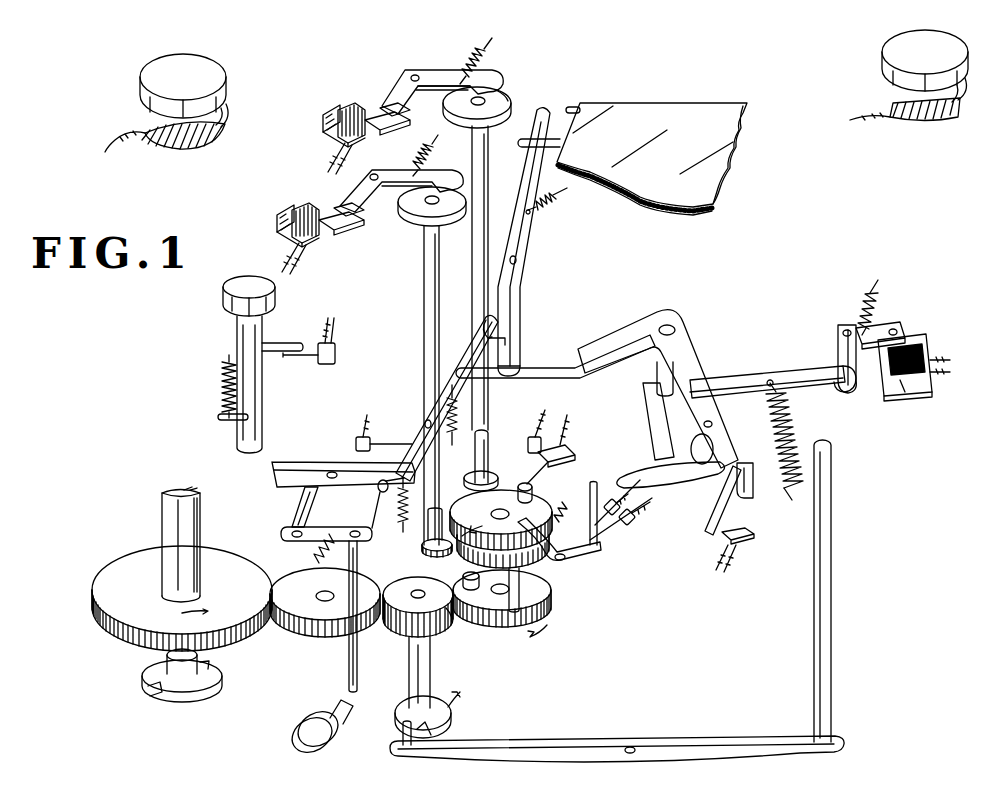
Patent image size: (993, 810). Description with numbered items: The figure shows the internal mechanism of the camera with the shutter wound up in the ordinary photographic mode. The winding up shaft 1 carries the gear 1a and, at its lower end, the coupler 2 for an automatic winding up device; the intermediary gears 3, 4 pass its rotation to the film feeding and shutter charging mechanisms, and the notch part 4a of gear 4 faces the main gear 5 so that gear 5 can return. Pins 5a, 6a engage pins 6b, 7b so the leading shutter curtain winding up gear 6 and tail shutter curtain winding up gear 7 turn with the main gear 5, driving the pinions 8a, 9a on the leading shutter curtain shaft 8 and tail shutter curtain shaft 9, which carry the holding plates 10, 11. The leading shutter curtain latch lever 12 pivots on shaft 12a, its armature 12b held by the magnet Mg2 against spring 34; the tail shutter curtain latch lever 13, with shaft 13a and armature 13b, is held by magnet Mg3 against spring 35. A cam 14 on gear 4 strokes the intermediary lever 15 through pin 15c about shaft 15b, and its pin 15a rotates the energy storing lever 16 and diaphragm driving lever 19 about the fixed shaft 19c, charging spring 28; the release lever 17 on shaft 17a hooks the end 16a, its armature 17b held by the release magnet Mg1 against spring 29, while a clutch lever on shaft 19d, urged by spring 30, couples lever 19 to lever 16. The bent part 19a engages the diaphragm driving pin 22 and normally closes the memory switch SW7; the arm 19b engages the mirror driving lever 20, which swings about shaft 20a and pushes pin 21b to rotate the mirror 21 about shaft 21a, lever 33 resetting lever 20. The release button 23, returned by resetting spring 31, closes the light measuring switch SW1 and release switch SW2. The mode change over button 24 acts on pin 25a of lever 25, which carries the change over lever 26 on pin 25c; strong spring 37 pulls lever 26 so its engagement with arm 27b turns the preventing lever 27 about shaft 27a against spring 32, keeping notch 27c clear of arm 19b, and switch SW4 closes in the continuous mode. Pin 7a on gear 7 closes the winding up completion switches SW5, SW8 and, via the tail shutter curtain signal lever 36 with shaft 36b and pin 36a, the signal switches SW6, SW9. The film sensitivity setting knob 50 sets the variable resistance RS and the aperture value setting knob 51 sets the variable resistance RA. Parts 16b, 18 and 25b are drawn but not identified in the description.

The winding up shaft 1 is at (165, 521).
The gear 1a is at (140, 635).
The coupler 2 is at (222, 673).
The intermediary gear 3 is at (298, 625).
The intermediary gear 4 is at (436, 632).
The notch part 4a is at (455, 614).
The main gear 5 is at (503, 617).
The pin 5a is at (463, 577).
The leading shutter curtain winding up gear 6 is at (538, 562).
The pin 6a is at (548, 612).
The pin 6b is at (520, 600).
The tail shutter curtain winding up gear 7 is at (540, 517).
The pin 7a is at (523, 483).
The pin 7b is at (494, 540).
The leading shutter curtain shaft 8 is at (428, 530).
The pinion 8a is at (423, 550).
The tail shutter curtain shaft 9 is at (488, 455).
The pinion 9a is at (474, 477).
The leading shutter curtain holding plate 10 is at (450, 216).
The tail shutter curtain holding plate 11 is at (498, 103).
The leading shutter curtain latch lever 12 is at (403, 178).
The shaft 12a is at (372, 174).
The armature 12b is at (348, 222).
The tail shutter curtain latch lever 13 is at (459, 78).
The shaft 13a is at (416, 75).
The armature 13b is at (392, 120).
The cam 14 is at (448, 717).
The intermediary lever 15 is at (557, 740).
The pin 15a is at (826, 606).
The shaft 15b is at (630, 746).
The pin 15c is at (403, 729).
The energy storing lever 16 is at (735, 380).
The end of energy storing lever 16a is at (838, 366).
The arm 16b is at (664, 455).
The release lever 17 is at (858, 380).
The shaft 17a is at (845, 330).
The armature 17b is at (900, 326).
The pawl 18 is at (662, 478).
The diaphragm driving lever 19 is at (638, 340).
The bent part 19a is at (746, 463).
The arm 19b is at (545, 370).
The fixed shaft 19c is at (672, 326).
The shaft 19d is at (713, 424).
The mirror driving lever 20 is at (525, 238).
The shaft 20a is at (517, 261).
The mirror 21 is at (652, 146).
The shaft 21a is at (575, 106).
The pin 21b is at (522, 145).
The diaphragm driving pin 22 is at (710, 527).
The release button 23 is at (247, 275).
The photographic mode change over button 24 is at (296, 733).
The lever 25 is at (305, 505).
The pin 25a is at (349, 682).
The hole 25b is at (292, 534).
The pin 25c is at (333, 470).
The change over lever 26 is at (322, 463).
The lever for preventing the resetting 27 is at (432, 405).
The shaft 27a is at (424, 420).
The arm 27b is at (378, 491).
The notch 27c is at (497, 336).
The spring 28 is at (790, 428).
The spring 29 is at (874, 300).
The spring 30 is at (700, 464).
The resetting spring 31 is at (222, 385).
The spring 32 is at (460, 415).
The lever 33 is at (552, 203).
The spring 34 is at (427, 142).
The spring 35 is at (485, 55).
The tail shutter curtain signal lever 36 is at (600, 548).
The pin 36a is at (594, 483).
The shaft 36b is at (566, 560).
The spring 37 is at (400, 526).
The film sensitivity setting knob 50 is at (892, 52).
The aperture value setting knob 51 is at (218, 82).
The variable resistance RA is at (180, 150).
The variable resistance RS is at (922, 120).
The release magnet Mg1 is at (908, 394).
The magnet Mg2 is at (300, 200).
The magnet Mg3 is at (363, 102).
The light measuring switch SW1 is at (316, 346).
The release switch SW2 is at (300, 358).
The photographic mode change over switch SW4 is at (366, 438).
The winding up completion switch SW5 is at (566, 460).
The tail shutter curtain signal switch SW6 is at (634, 518).
The memory switch SW7 is at (740, 543).
The winding up completion switch of the motor circuit SW8 is at (533, 436).
The tail shutter curtain signal switch of the motor circuit SW9 is at (612, 500).